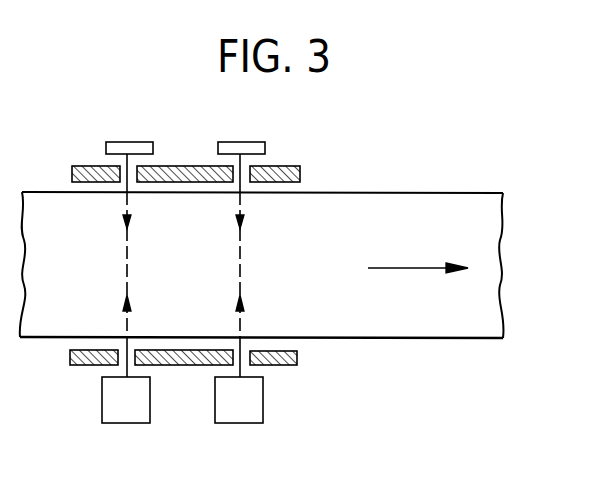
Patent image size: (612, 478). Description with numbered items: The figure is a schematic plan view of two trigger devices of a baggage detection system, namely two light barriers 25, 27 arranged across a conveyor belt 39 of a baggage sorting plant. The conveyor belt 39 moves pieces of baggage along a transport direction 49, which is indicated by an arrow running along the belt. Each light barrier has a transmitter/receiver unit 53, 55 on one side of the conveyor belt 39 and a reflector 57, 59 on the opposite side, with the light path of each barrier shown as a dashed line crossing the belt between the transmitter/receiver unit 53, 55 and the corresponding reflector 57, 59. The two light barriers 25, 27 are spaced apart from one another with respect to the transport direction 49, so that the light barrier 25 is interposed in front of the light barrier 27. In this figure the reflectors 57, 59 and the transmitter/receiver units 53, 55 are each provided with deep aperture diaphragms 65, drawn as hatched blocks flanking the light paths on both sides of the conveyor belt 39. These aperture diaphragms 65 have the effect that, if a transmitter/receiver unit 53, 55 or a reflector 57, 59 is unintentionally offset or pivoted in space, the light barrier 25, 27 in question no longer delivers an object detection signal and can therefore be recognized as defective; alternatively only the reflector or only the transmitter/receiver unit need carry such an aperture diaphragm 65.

The light barrier 25 is at (100, 310).
The light barrier 27 is at (271, 310).
The conveyor belt 39 is at (414, 213).
The transport direction 49 is at (398, 268).
The transmitter/receiver unit 53 is at (128, 412).
The transmitter/receiver unit 55 is at (248, 412).
The reflector 57 is at (132, 142).
The reflector 59 is at (244, 142).
The aperture diaphragm 65 is at (82, 165).